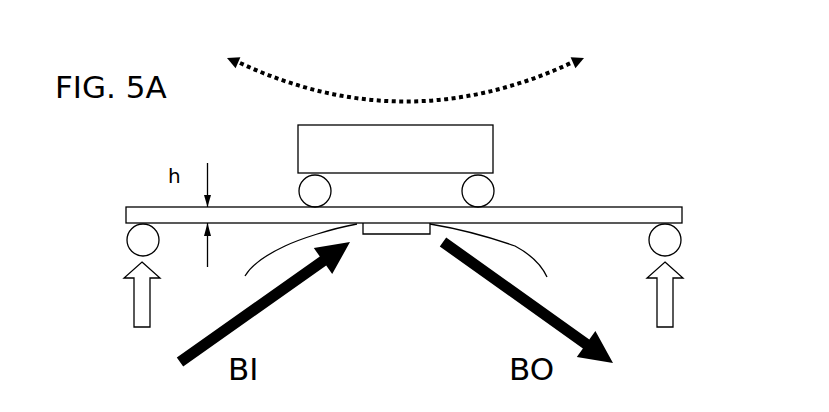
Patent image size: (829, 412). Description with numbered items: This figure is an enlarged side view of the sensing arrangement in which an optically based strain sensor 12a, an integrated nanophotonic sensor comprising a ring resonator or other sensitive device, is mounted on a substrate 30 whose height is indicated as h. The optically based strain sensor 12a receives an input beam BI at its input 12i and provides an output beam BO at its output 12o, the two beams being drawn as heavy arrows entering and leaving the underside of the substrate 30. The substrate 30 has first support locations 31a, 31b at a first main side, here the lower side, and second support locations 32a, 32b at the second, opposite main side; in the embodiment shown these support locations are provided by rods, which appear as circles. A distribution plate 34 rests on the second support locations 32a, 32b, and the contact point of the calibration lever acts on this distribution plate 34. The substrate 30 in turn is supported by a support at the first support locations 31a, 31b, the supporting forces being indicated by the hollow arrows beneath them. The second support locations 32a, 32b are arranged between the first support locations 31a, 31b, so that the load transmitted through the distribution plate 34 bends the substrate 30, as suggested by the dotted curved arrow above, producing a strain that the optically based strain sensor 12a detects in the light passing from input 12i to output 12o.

The substrate 30 is at (607, 206).
The first support location 31a is at (145, 236).
The first support location 31b is at (657, 235).
The second support location 32a is at (317, 193).
The second support location 32b is at (487, 192).
The distribution plate 34 is at (400, 167).
The optically based strain sensor 12a is at (402, 237).
The input 12i is at (282, 263).
The output 12o is at (512, 264).